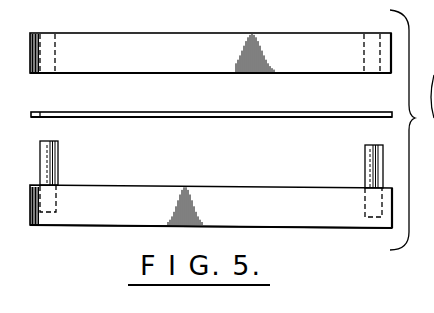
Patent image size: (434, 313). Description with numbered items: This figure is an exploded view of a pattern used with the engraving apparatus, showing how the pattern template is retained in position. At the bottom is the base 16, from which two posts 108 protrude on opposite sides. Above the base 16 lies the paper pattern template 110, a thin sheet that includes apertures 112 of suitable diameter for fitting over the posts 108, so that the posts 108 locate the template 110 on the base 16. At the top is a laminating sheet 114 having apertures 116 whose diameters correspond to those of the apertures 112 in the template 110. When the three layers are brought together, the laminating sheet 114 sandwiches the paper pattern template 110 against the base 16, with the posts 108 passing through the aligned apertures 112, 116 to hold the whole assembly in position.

The base 16 is at (297, 218).
The posts 108 is at (50, 158).
The paper pattern template 110 is at (203, 118).
The apertures 112 is at (48, 112).
The laminating sheet 114 is at (205, 40).
The apertures 116 is at (50, 36).